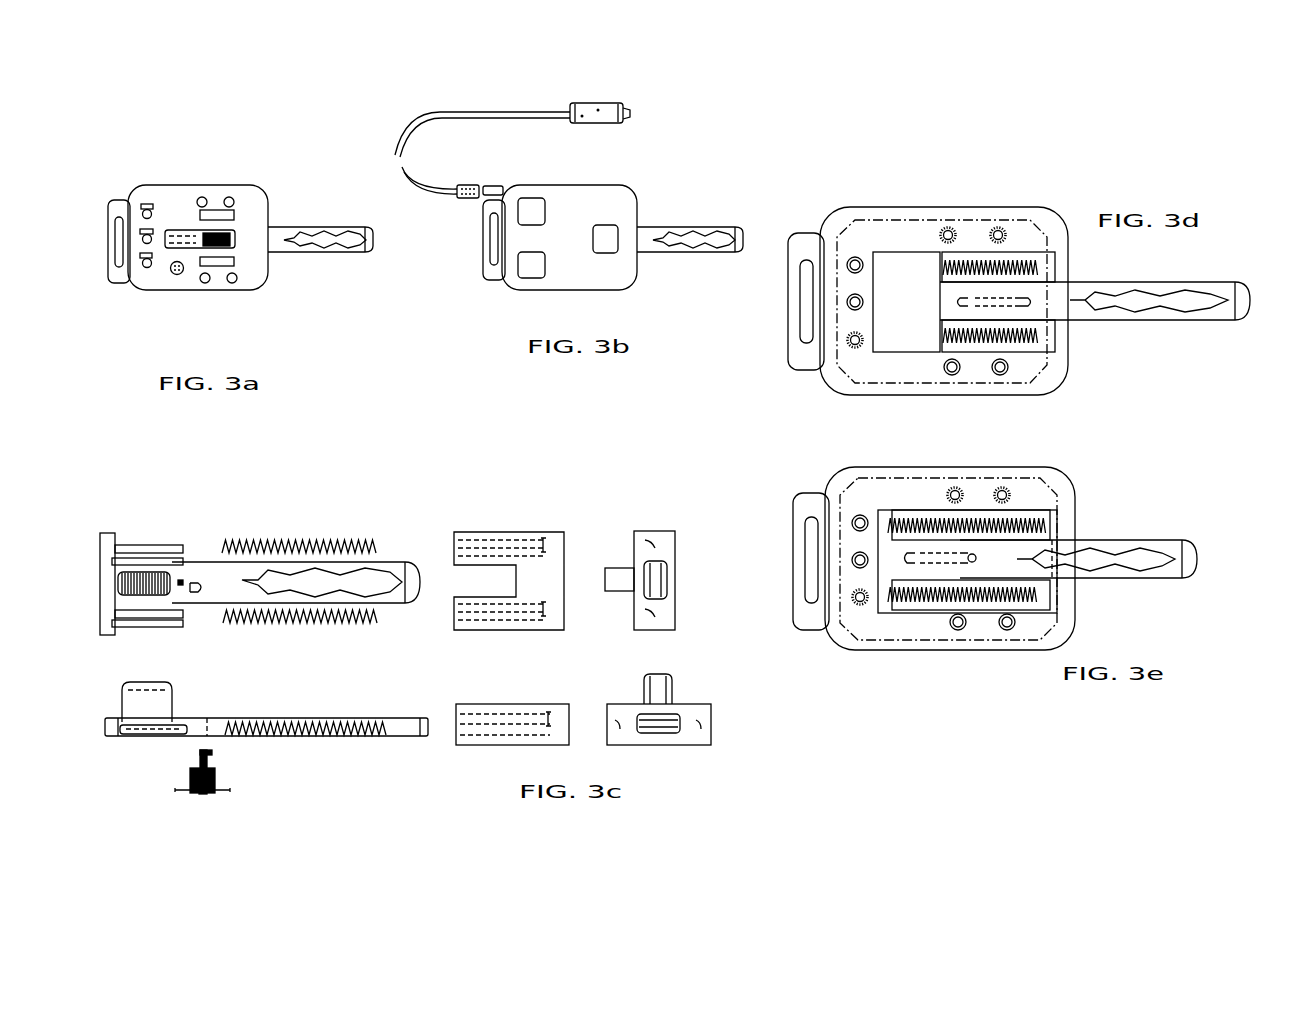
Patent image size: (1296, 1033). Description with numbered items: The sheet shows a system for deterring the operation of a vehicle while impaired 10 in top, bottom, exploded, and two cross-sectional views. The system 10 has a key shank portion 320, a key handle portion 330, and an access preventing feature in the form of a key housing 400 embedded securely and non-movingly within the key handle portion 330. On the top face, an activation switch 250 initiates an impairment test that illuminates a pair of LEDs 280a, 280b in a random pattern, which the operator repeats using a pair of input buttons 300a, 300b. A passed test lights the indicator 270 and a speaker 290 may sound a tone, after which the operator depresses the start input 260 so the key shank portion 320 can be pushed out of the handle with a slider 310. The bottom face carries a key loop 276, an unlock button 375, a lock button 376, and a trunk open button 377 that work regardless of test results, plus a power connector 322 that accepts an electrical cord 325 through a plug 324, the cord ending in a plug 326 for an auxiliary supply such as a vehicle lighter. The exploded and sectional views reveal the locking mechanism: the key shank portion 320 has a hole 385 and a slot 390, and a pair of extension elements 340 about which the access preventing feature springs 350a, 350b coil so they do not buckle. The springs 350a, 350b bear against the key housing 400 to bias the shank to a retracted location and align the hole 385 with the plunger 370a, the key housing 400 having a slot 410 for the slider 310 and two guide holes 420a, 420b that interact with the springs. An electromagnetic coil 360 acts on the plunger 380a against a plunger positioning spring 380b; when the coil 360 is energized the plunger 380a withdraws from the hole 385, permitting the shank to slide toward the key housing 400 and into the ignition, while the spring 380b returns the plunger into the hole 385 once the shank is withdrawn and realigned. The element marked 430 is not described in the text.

In FIG. 3a, the system for deterring the operation of a vehicle while impaired 10 is at (183, 116).
In FIG. 3a, the activation switch 250 is at (159, 213).
In FIG. 3a, the start input 260 is at (137, 237).
In FIG. 3a, the indicator 270 is at (138, 260).
In FIG. 3a, the key loop 276 is at (117, 253).
In FIG. 3a, the LED 280a is at (202, 197).
In FIG. 3a, the LED 280b is at (229, 197).
In FIG. 3a, the speaker 290 is at (172, 277).
In FIG. 3a, the input button 300a is at (205, 279).
In FIG. 3a, the input button 300b is at (237, 282).
In FIG. 3a, the slider 310 is at (227, 235).
In FIG. 3c, the slider 310 is at (157, 585).
In FIG. 3a, the key shank portion 320 is at (295, 238).
In FIG. 3b, the key shank portion 320 is at (700, 237).
In FIG. 3c, the key shank portion 320 is at (383, 578).
In FIG. 3b, the power connector 322 is at (493, 187).
In FIG. 3b, the plug 324 is at (468, 183).
In FIG. 3b, the electrical cord 325 is at (550, 110).
In FIG. 3b, the plug 326 is at (593, 110).
In FIG. 3a, the key handle portion 330 is at (177, 192).
In FIG. 3b, the key handle portion 330 is at (633, 288).
In FIG. 3d, the key handle portion 330 is at (978, 202).
In FIG. 3c, the extension elements 340 is at (150, 620).
In FIG. 3d, the access preventing feature spring 350a is at (1003, 340).
In FIG. 3e, the access preventing feature spring 350a is at (987, 593).
In FIG. 3c, the access preventing feature spring 350a is at (365, 620).
In FIG. 3d, the access preventing feature spring 350b is at (1000, 263).
In FIG. 3e, the access preventing feature spring 350b is at (977, 527).
In FIG. 3c, the access preventing feature spring 350b is at (322, 545).
In FIG. 3c, the electromagnetic coil 360 is at (192, 790).
In FIG. 3d, the plunger 370a is at (965, 293).
In FIG. 3e, the plunger 370a is at (977, 550).
In FIG. 3b, the unlock button 375 is at (532, 210).
In FIG. 3b, the lock button 376 is at (607, 233).
In FIG. 3b, the trunk open button 377 is at (537, 268).
In FIG. 3c, the plunger 380a is at (207, 753).
In FIG. 3c, the plunger positioning spring 380b is at (203, 793).
In FIG. 3d, the hole 385 is at (1032, 307).
In FIG. 3e, the hole 385 is at (982, 565).
In FIG. 3c, the hole 385 is at (207, 717).
In FIG. 3d, the slot 390 is at (948, 343).
In FIG. 3e, the slot 390 is at (930, 558).
In FIG. 3c, the slot 390 is at (142, 728).
In FIG. 3c, the key housing 400 is at (639, 531).
In FIG. 3c, the slot 410 is at (502, 714).
In FIG. 3c, the guide hole 420a is at (644, 615).
In FIG. 3c, the guide hole 420b is at (648, 548).
In FIG. 3d, the circuit board 430 is at (833, 325).
In FIG. 3e, the circuit board 430 is at (840, 522).